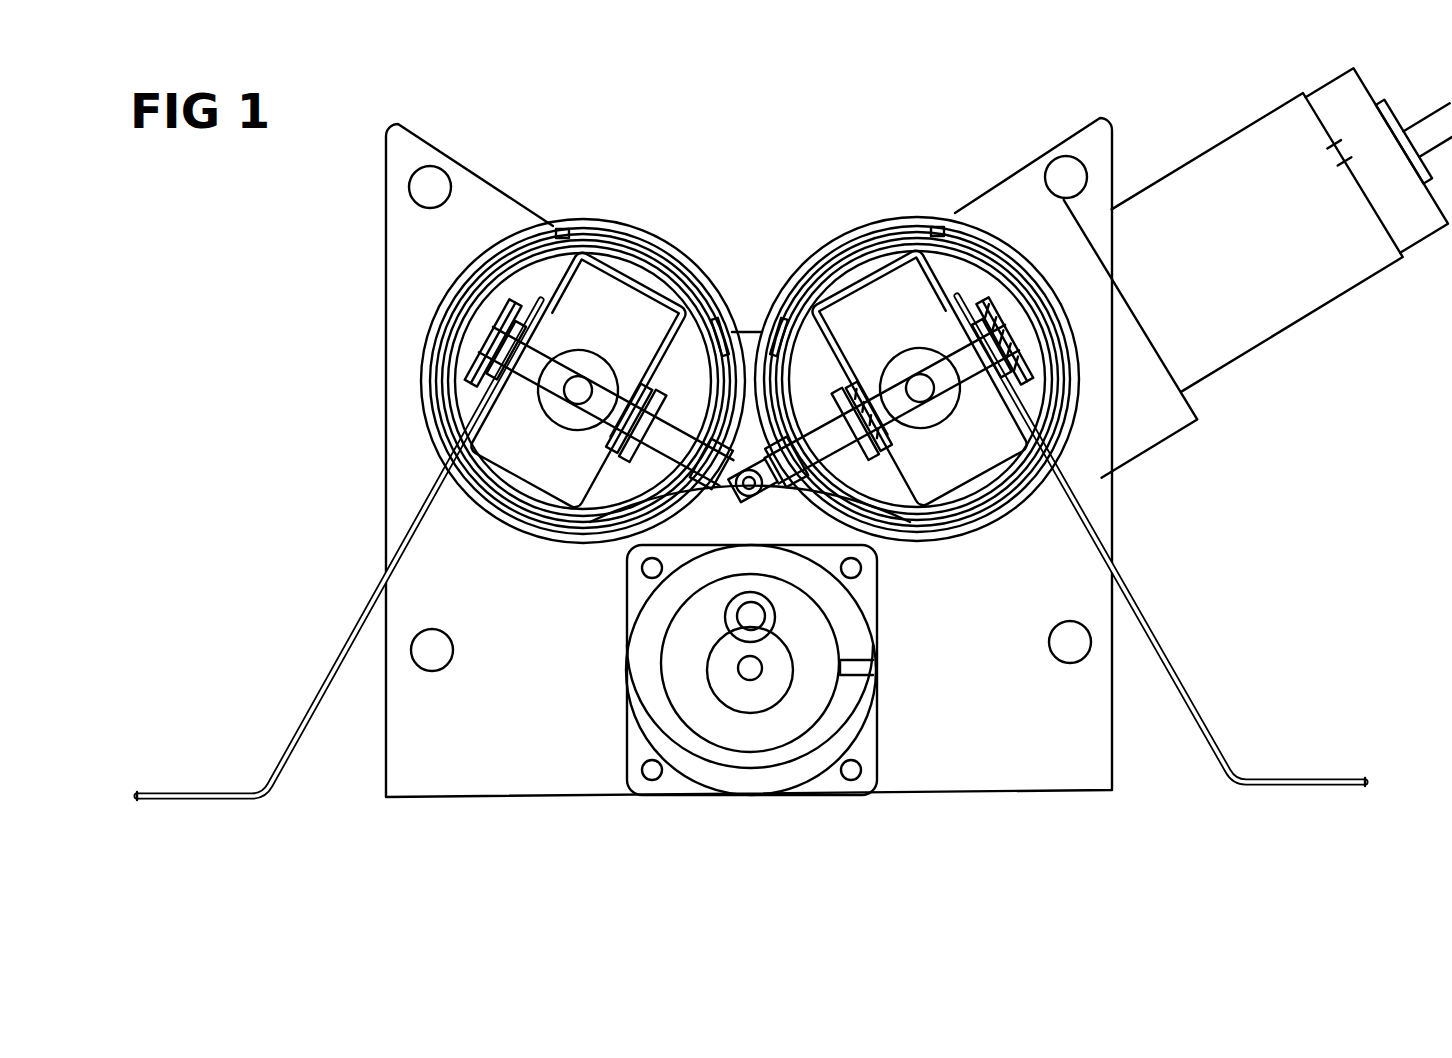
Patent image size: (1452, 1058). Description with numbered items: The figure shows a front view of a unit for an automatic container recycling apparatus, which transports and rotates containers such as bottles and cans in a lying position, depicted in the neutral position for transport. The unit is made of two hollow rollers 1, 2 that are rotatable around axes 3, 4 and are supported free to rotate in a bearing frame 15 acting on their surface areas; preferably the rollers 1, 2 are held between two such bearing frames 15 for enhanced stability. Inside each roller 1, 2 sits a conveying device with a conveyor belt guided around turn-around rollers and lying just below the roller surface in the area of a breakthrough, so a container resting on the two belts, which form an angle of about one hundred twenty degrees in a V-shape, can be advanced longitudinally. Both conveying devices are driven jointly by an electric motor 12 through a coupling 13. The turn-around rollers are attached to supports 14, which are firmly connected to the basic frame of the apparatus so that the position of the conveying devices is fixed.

The roller 1 is at (561, 357).
The roller 2 is at (920, 362).
The axis 3 is at (578, 390).
The axis 4 is at (920, 388).
The electric motor 12 is at (1288, 302).
The coupling 13 is at (746, 490).
The support 14 is at (337, 660).
The bearing frame 15 is at (385, 157).